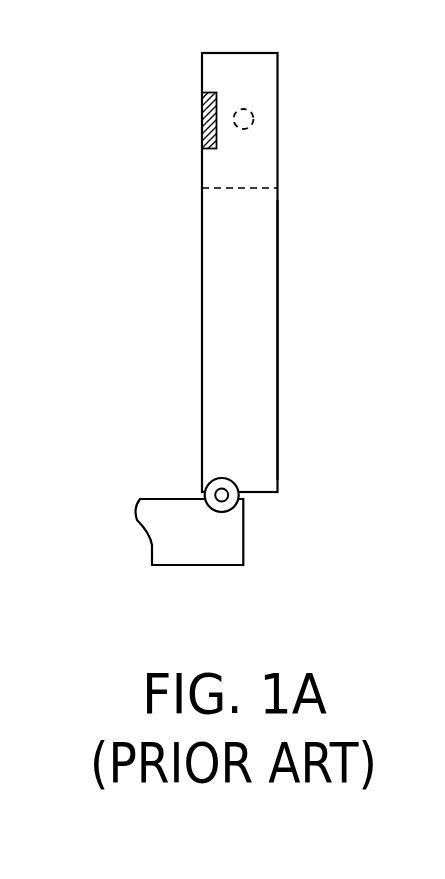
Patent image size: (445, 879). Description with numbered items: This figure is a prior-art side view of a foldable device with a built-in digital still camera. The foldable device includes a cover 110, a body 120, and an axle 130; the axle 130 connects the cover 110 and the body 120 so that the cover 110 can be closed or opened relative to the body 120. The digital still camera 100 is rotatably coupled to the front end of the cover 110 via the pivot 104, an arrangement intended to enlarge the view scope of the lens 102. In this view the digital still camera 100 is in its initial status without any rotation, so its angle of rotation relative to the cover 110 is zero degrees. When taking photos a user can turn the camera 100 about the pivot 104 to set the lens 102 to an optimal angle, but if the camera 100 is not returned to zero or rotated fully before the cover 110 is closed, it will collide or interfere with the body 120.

The digital still camera 100 is at (278, 92).
The lens 102 is at (202, 123).
The pivot 104 is at (254, 117).
The cover 110 is at (278, 273).
The body 120 is at (183, 565).
The axle 130 is at (239, 497).